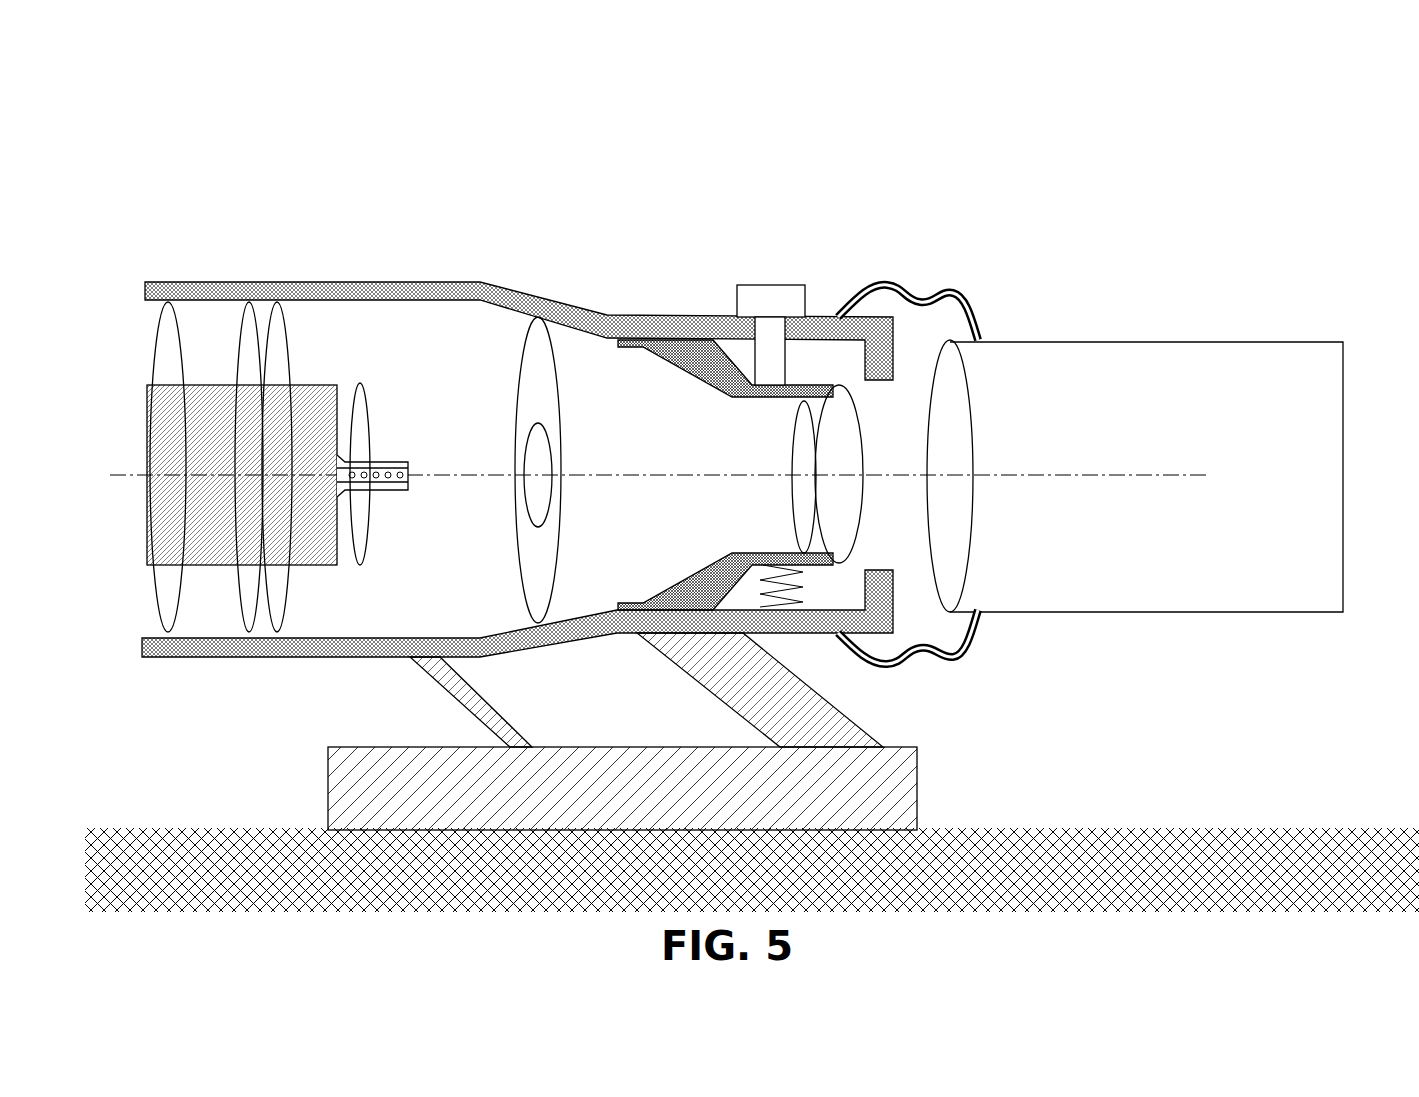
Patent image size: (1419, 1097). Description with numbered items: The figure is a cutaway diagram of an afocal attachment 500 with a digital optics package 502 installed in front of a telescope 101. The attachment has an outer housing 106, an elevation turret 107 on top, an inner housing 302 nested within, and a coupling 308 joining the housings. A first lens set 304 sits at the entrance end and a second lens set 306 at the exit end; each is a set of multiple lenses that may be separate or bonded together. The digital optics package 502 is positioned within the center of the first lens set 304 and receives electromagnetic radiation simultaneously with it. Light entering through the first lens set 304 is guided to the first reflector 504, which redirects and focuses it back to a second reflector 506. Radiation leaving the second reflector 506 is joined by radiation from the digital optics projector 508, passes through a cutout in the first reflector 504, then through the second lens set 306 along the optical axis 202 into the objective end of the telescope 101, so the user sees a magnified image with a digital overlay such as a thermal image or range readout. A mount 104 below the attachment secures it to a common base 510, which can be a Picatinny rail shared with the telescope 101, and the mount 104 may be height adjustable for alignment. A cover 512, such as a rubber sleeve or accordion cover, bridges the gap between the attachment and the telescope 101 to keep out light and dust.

The afocal attachment 500 is at (1097, 123).
The first lens set 304 is at (170, 305).
The digital optics projector 508 is at (405, 455).
The first reflector 504 is at (540, 318).
The elevation turret 107 is at (738, 283).
The cover 512 is at (910, 288).
The optical axis 202 is at (1202, 475).
The digital optics package 502 is at (242, 475).
The outer housing 106 is at (157, 660).
The second reflector 506 is at (360, 560).
The inner housing 302 is at (687, 587).
The coupling 308 is at (785, 605).
The second lens set 306 is at (838, 547).
The base 510 is at (1177, 840).
The telescope 101 is at (1225, 593).
The mount 104 is at (622, 731).